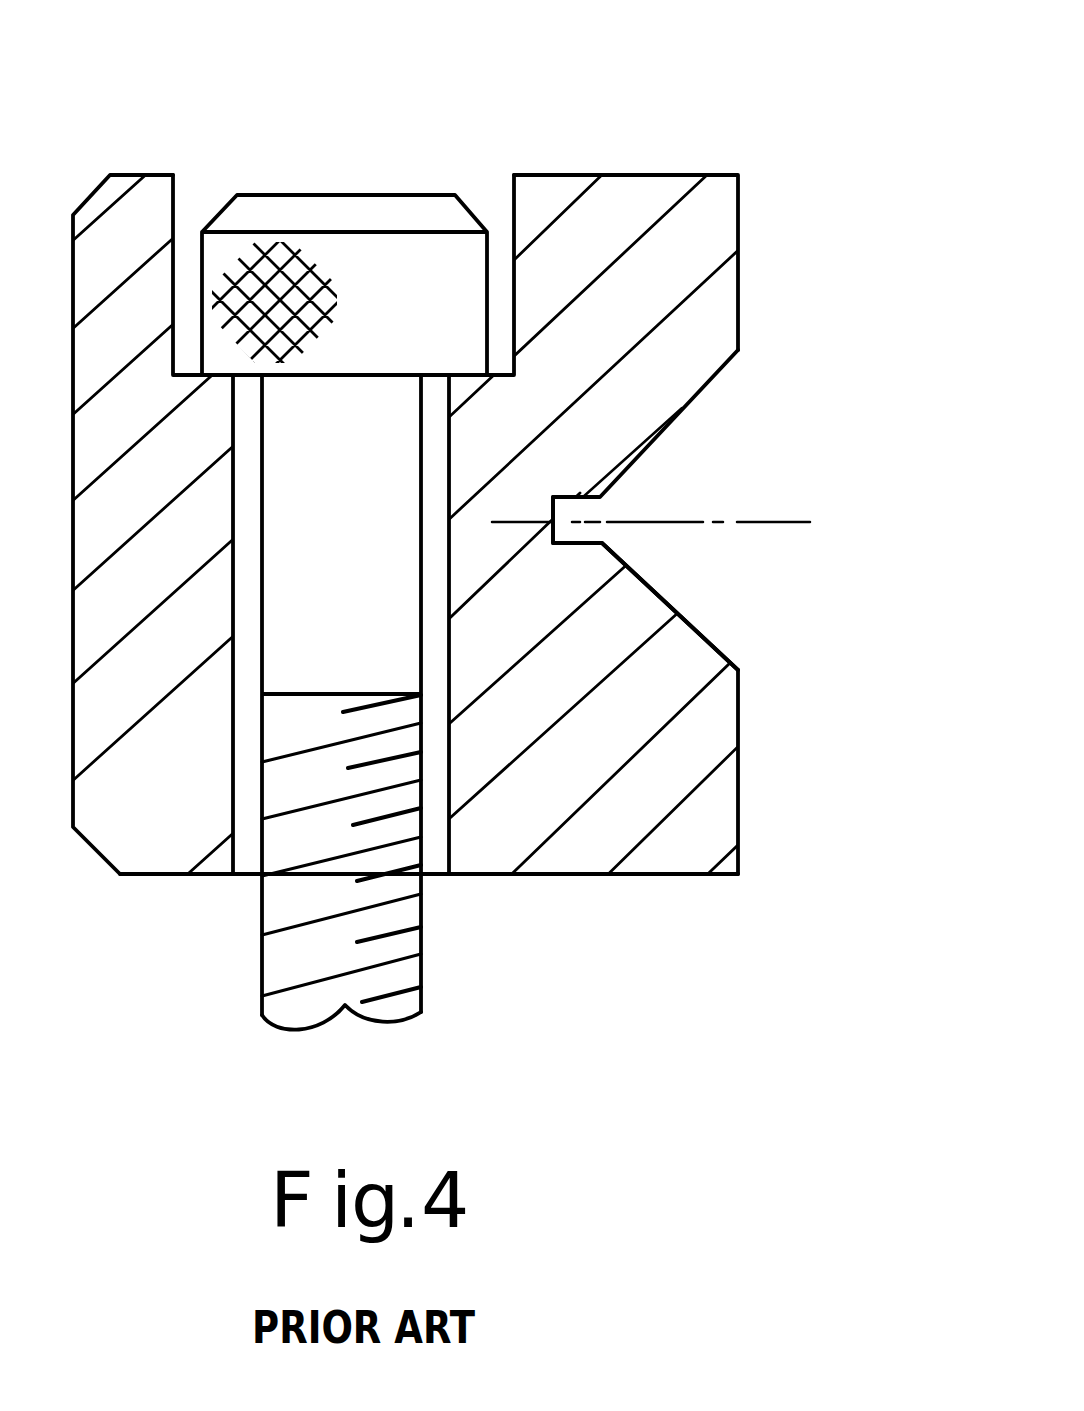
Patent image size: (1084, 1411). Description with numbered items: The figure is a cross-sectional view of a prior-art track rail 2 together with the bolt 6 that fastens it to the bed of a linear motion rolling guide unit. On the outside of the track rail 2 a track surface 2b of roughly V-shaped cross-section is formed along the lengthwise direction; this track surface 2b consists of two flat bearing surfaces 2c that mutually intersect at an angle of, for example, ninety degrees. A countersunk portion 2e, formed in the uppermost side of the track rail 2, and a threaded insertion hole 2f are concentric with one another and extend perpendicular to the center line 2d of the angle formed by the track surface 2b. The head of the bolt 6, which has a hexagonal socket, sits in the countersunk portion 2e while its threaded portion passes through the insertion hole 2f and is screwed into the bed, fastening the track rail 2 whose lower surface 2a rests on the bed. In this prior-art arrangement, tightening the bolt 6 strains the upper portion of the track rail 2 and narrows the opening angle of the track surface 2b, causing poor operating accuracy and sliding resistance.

The track rail 2 is at (152, 160).
The bottom surface of holder body 2a is at (680, 874).
The track surface 2b is at (673, 610).
The flat bearing surface 2c is at (680, 410).
The center line 2d is at (767, 521).
The countersunk portion 2e is at (507, 200).
The threaded insertion hole 2f is at (235, 813).
The bolt 6 is at (408, 912).